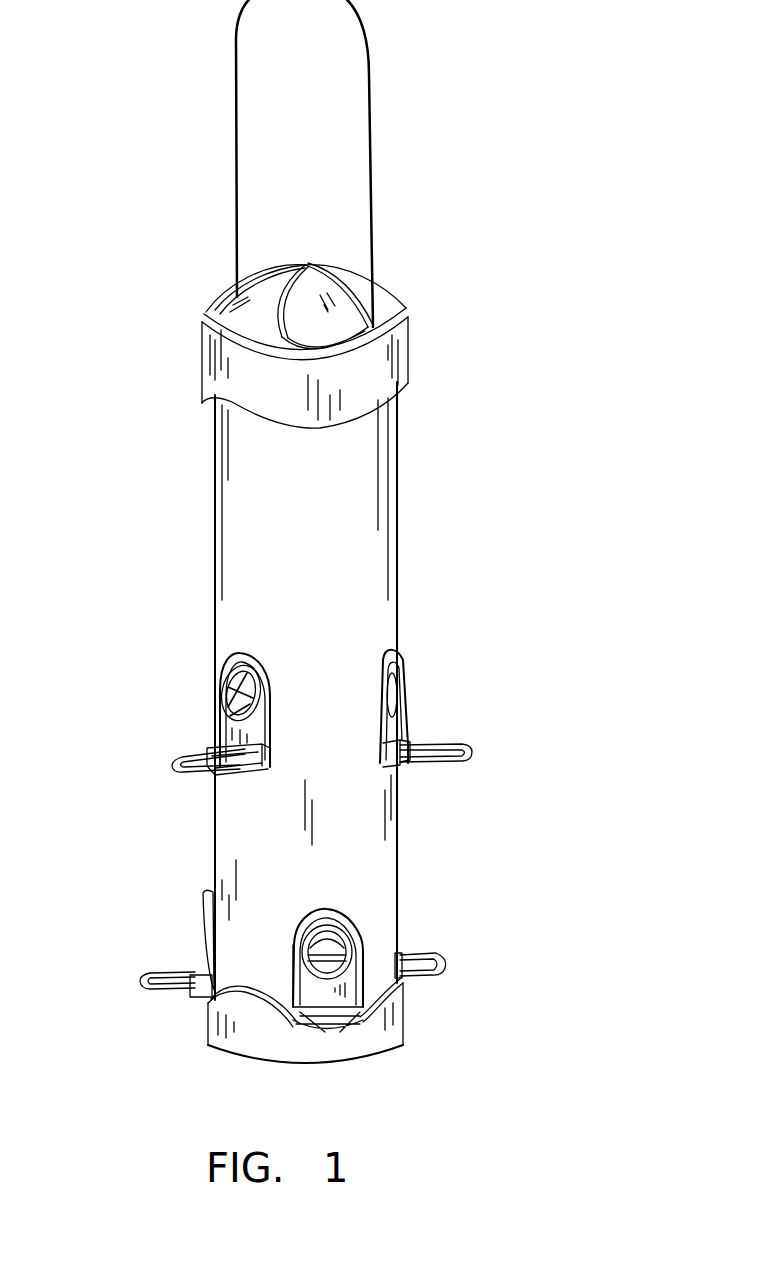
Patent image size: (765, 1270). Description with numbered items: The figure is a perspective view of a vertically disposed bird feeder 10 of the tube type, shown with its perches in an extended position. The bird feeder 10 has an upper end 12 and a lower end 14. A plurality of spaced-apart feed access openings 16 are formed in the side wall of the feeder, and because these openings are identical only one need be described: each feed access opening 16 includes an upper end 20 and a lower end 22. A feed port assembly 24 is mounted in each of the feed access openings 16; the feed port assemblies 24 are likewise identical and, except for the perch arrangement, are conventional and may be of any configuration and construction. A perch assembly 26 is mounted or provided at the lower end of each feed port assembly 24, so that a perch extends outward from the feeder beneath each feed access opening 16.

The bird feeder 10 is at (410, 513).
The upper end 12 is at (400, 268).
The lower end 14 is at (245, 1067).
The feed access opening 16 is at (386, 647).
The upper end 20 is at (248, 652).
The lower end 22 is at (250, 777).
The feed port assembly 24 is at (272, 715).
The perch assembly 26 is at (182, 781).